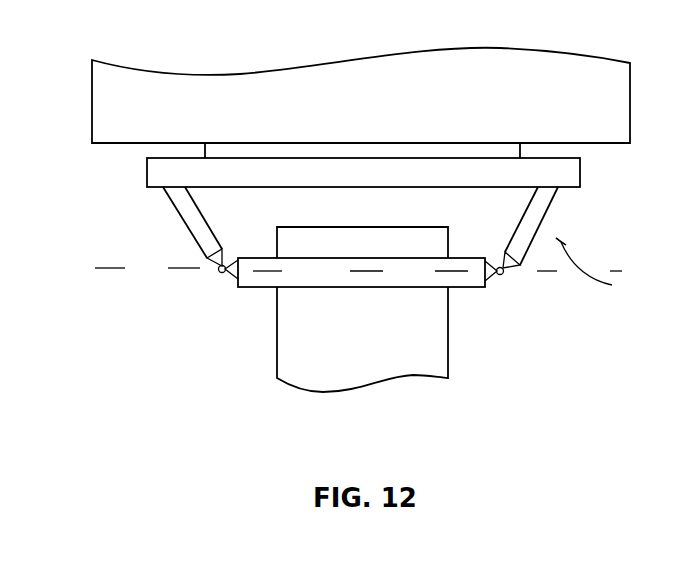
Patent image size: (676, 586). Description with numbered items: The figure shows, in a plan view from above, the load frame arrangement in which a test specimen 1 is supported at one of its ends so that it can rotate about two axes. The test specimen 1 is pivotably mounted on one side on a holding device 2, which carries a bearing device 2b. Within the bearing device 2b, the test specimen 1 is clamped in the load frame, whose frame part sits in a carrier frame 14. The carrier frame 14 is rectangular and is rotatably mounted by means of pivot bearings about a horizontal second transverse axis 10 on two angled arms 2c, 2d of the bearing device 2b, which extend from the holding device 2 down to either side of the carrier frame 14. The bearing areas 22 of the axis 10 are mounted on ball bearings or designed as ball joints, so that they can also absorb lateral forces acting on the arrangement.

The test specimen 1 is at (277, 362).
The holding device 2 is at (95, 98).
The bearing device 2b is at (610, 267).
The angled arm 2c is at (182, 225).
The angled arm 2d is at (556, 212).
The second transverse axis 10 is at (120, 272).
The carrier frame 14 is at (470, 290).
The bearing areas 22 is at (220, 275).